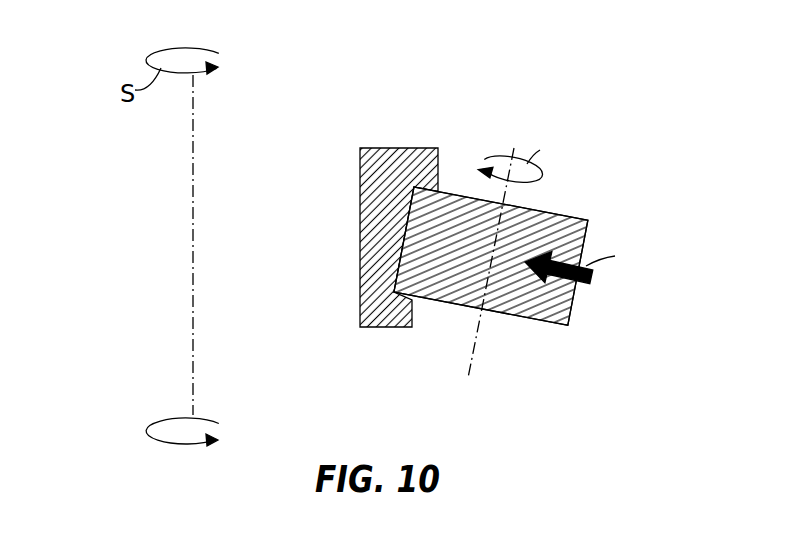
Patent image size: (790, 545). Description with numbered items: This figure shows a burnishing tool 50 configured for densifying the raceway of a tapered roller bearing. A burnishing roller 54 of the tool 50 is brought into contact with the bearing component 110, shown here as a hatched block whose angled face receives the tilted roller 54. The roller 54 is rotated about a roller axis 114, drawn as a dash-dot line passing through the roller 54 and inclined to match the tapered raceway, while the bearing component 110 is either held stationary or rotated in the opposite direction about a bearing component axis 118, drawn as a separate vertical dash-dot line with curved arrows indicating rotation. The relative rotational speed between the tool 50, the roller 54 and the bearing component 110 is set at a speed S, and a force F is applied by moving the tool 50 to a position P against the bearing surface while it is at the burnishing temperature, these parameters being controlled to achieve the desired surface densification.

The burnishing tool 50 is at (511, 225).
The burnishing roller 54 is at (577, 219).
The bearing component 110 is at (393, 170).
The roller axis 114 is at (479, 330).
The bearing component axis 118 is at (190, 350).